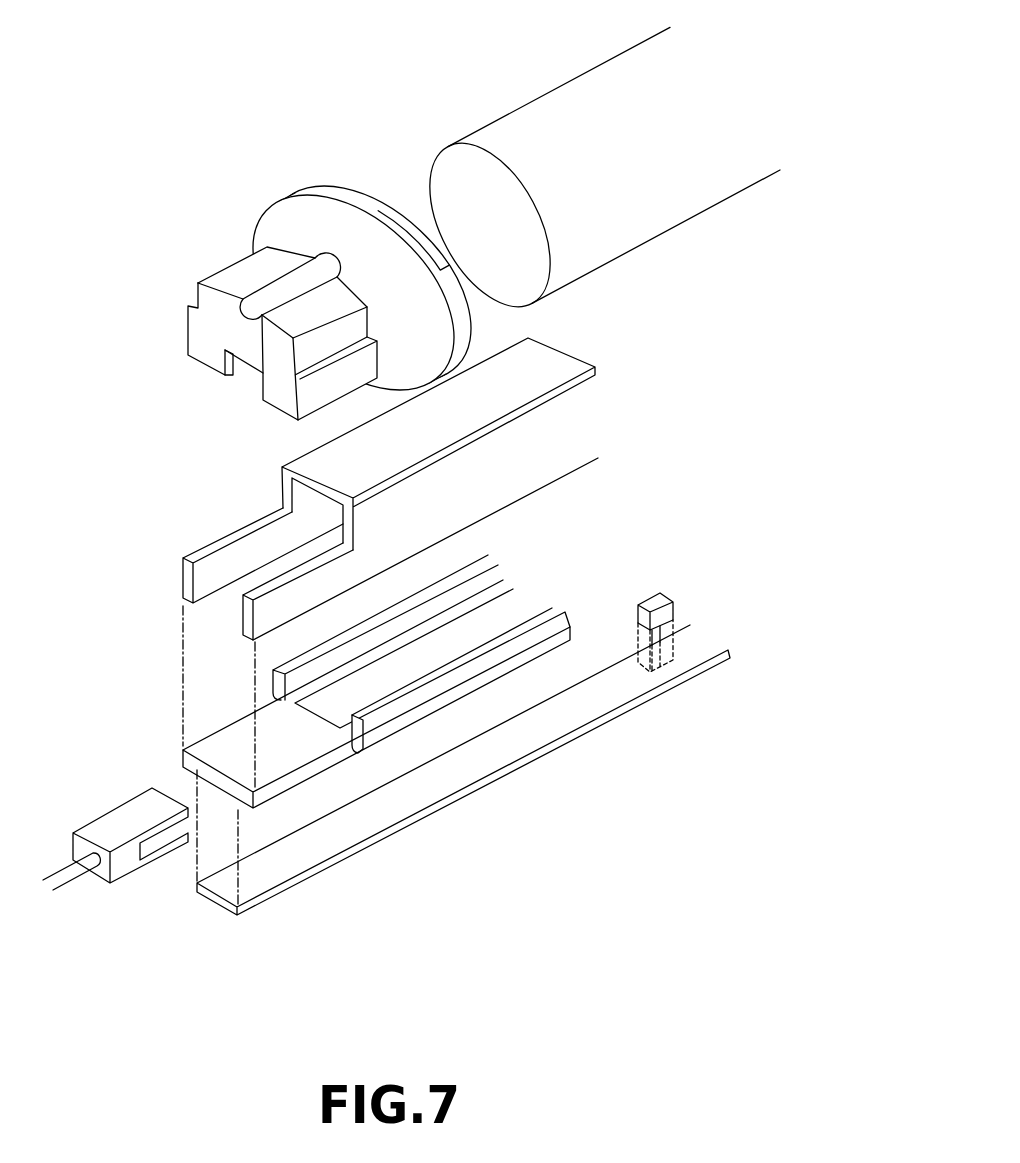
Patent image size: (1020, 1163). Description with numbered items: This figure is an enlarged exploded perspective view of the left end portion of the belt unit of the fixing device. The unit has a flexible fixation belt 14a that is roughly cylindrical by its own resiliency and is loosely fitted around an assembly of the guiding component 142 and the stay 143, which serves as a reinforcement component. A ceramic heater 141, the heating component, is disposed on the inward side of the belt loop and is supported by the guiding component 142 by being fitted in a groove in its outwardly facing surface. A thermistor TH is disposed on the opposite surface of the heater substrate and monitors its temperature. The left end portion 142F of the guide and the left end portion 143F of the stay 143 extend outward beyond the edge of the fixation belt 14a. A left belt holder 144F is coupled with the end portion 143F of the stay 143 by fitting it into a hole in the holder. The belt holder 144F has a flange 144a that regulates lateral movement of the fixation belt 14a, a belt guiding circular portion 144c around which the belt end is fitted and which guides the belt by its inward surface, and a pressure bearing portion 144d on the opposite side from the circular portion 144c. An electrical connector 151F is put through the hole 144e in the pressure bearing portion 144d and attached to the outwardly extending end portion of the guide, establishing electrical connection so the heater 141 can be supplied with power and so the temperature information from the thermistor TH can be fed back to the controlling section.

The fixation belt 14a is at (683, 188).
The left belt holder 144F is at (262, 170).
The flange 144a is at (361, 250).
The belt guiding circular portion 144c is at (397, 212).
The pressure bearing portion 144d is at (221, 318).
The hole 144e is at (247, 380).
The stay 143 is at (355, 489).
The left end portion of stay 143F is at (275, 582).
The guiding component 142 is at (355, 681).
The left end portion of guide 142F is at (222, 742).
The ceramic heater 141 is at (498, 753).
The thermistor TH is at (660, 602).
The electrical connector 151F is at (128, 867).